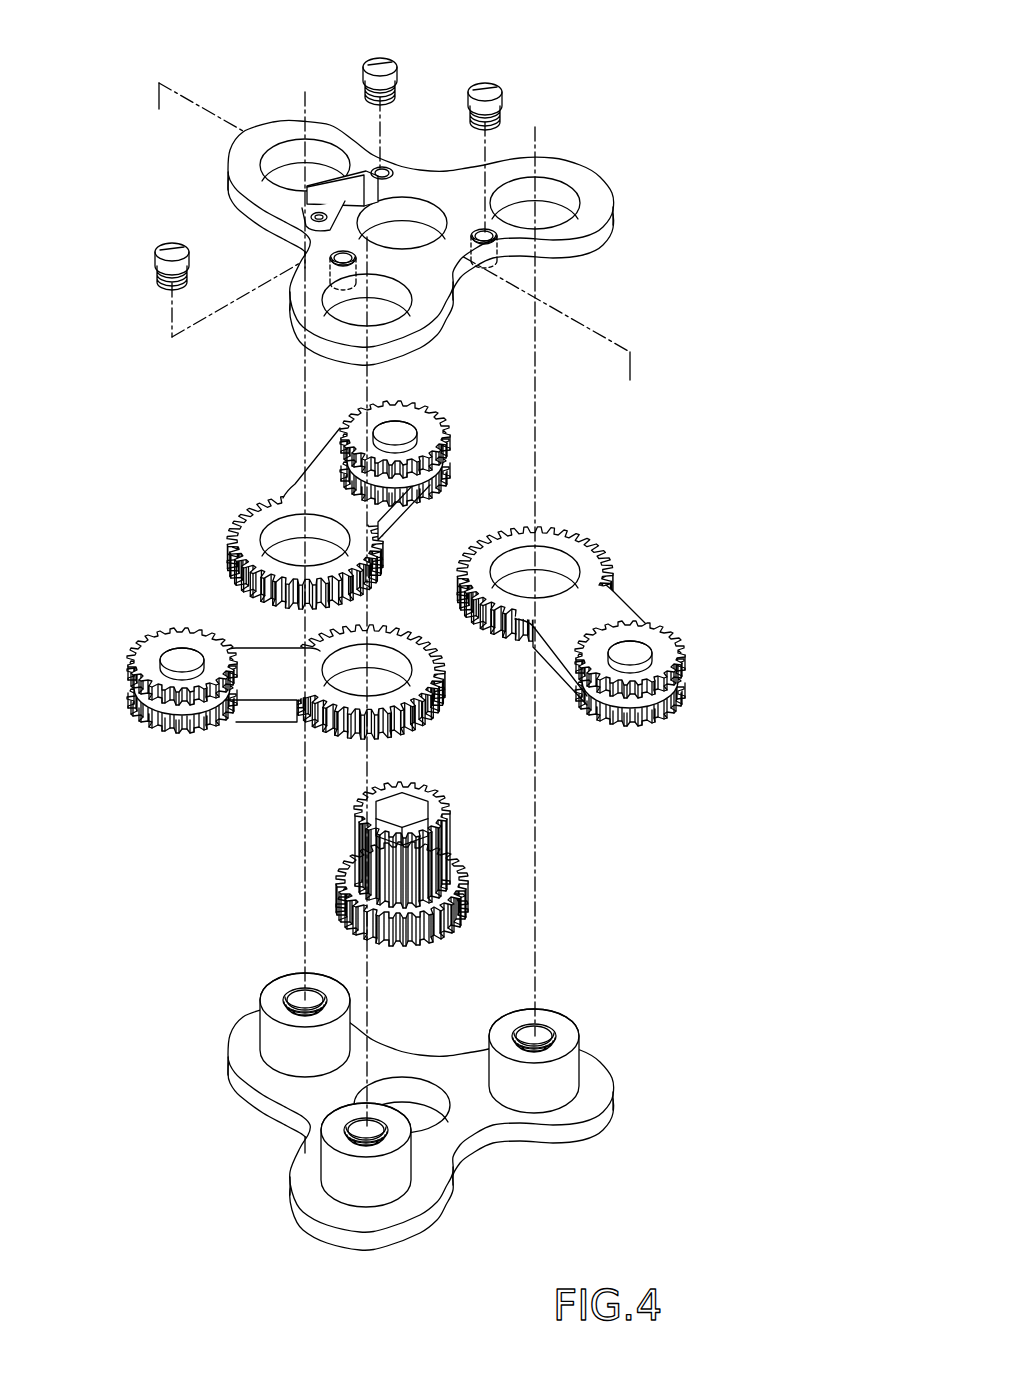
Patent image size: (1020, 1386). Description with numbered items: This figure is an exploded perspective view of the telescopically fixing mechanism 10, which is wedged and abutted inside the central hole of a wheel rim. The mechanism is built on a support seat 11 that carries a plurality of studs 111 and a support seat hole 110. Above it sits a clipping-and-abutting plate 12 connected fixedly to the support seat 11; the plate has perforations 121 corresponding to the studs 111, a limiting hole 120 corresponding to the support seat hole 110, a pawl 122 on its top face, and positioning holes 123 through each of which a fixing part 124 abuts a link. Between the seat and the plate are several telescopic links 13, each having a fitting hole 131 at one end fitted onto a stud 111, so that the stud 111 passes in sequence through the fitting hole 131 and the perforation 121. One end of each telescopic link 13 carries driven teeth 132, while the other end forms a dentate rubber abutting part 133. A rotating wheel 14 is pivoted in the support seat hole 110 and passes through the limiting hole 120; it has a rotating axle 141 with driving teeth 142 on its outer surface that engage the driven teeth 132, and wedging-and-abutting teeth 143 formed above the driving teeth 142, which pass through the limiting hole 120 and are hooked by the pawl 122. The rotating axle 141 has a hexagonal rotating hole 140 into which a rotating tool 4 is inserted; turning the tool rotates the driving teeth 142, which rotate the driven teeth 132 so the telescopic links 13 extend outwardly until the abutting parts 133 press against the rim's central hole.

The telescopically fixing mechanism 10 is at (767, 453).
The support seat 11 is at (474, 1107).
The support seat hole 110 is at (420, 1093).
The stud 111 is at (563, 1028).
The clipping-and-abutting plate 12 is at (466, 208).
The limiting hole 120 is at (415, 210).
The perforation 121 is at (563, 193).
The pawl 122 is at (357, 177).
The positioning hole 123 is at (500, 236).
The fixing part 124 is at (488, 82).
The telescopic link 13 is at (627, 595).
The fitting hole 131 is at (546, 560).
The driven teeth 132 is at (492, 635).
The abutting part 133 is at (683, 693).
The rotating wheel 14 is at (484, 845).
The rotating hole 140 is at (420, 800).
The rotating axle 141 is at (432, 925).
The driving teeth 142 is at (468, 880).
The wedging-and-abutting teeth 143 is at (447, 833).
The rotating tool 4 is at (150, 113).